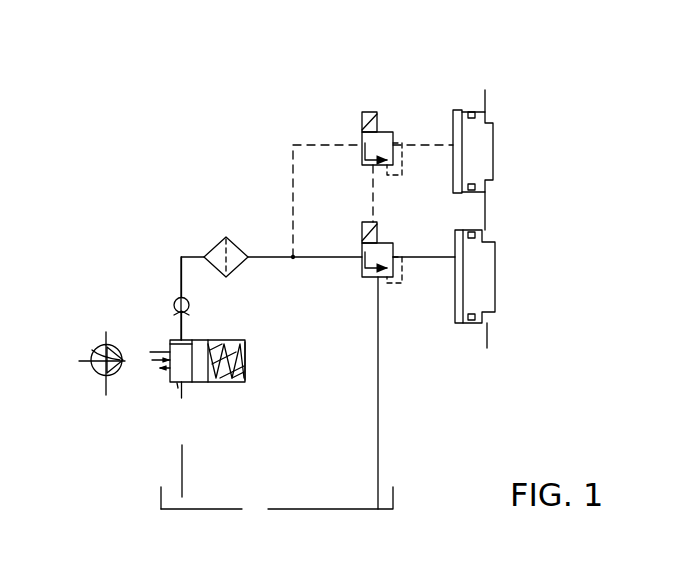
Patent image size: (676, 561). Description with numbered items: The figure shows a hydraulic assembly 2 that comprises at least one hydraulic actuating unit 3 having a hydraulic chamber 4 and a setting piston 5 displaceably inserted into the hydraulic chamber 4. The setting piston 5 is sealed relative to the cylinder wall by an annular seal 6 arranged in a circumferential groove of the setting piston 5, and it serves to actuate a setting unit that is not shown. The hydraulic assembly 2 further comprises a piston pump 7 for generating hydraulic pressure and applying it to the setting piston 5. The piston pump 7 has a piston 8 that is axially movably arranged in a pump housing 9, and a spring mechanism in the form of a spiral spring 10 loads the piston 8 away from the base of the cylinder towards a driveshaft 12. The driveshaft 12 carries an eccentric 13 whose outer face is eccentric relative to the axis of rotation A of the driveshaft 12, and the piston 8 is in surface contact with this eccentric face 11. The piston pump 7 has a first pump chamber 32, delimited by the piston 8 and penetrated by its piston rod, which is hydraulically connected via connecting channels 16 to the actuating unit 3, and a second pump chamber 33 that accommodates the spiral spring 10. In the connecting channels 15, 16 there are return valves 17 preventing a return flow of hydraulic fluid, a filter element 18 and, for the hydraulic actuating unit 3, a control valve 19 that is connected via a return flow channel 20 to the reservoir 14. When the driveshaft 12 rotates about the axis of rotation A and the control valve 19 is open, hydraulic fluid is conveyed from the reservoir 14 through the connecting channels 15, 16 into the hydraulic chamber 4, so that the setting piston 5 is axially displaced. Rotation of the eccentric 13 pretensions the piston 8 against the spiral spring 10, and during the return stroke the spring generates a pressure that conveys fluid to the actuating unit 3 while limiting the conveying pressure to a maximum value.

The hydraulic assembly 2 is at (213, 138).
The hydraulic actuating unit 3 is at (502, 183).
The hydraulic chamber 4 is at (455, 109).
The setting piston 5 is at (487, 158).
The annular seal 6 is at (476, 114).
The piston pump 7 is at (278, 357).
The piston 8 is at (187, 446).
The pump housing 9 is at (240, 340).
The spiral spring 10 is at (243, 368).
The eccentric face 11 is at (150, 352).
The driveshaft 12 is at (121, 321).
The eccentric 13 is at (145, 384).
The reservoir 14 is at (290, 508).
The connecting channel 15 is at (193, 412).
The connecting channel 16 is at (323, 257).
The return valve 17 is at (192, 307).
The filter element 18 is at (213, 243).
The control valve 19 is at (383, 130).
The return flow channel 20 is at (380, 395).
The first pump chamber 32 is at (157, 481).
The second pump chamber 33 is at (240, 380).
The axis of rotation A is at (96, 346).